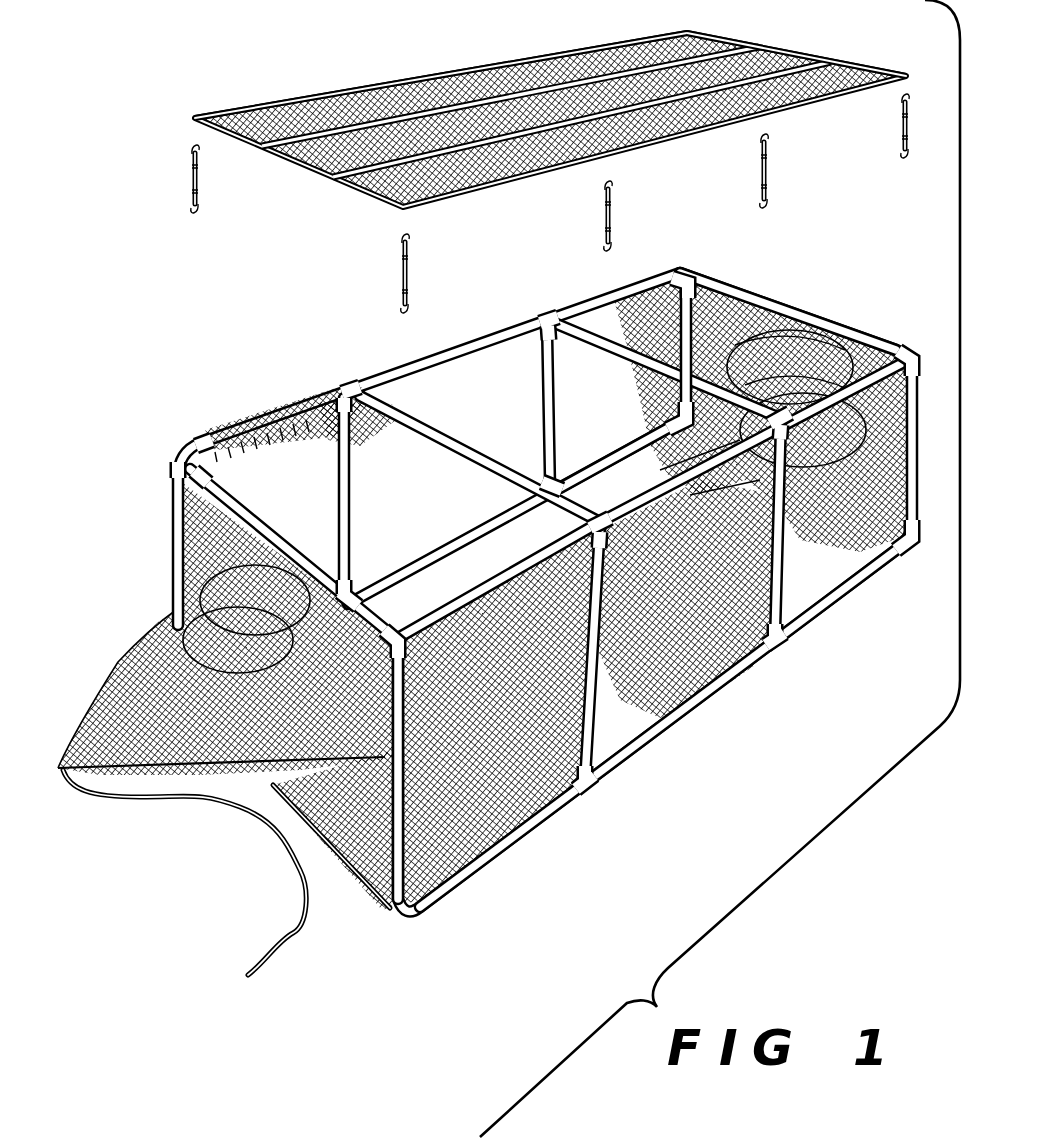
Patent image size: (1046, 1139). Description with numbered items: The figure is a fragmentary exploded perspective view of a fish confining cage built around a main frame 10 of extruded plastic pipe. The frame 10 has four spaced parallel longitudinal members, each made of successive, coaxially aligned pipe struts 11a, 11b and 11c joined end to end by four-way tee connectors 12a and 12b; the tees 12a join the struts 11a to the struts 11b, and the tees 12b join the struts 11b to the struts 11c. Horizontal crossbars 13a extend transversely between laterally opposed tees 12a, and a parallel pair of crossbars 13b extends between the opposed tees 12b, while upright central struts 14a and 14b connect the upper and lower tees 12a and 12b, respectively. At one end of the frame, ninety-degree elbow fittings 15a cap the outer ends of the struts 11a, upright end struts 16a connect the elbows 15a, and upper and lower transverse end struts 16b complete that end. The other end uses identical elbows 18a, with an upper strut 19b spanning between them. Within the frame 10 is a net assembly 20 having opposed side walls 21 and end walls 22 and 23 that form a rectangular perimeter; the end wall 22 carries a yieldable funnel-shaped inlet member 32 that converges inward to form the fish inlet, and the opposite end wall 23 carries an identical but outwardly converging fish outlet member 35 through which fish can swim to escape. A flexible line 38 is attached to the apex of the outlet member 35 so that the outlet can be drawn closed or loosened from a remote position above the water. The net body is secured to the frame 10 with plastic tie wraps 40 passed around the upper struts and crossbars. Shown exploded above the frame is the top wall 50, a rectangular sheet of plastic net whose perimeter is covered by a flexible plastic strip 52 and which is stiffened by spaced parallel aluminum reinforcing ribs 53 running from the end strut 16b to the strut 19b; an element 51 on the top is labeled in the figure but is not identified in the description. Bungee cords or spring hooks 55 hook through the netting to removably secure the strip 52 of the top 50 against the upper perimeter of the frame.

The main frame 10 is at (503, 328).
The pipe strut 11a is at (272, 412).
The pipe strut 11b is at (458, 360).
The pipe strut 11c is at (612, 302).
The four-way tee connector 12a is at (585, 792).
The four-way tee connector 12b is at (780, 641).
The crossbar 13a is at (437, 437).
The crossbar 13b is at (666, 370).
The central strut 14a is at (347, 490).
The central strut 14b is at (545, 398).
The elbow fitting 15a is at (182, 450).
The end strut 16a is at (172, 557).
The end strut 16b is at (252, 502).
The elbow fitting 18a is at (685, 283).
The strut 19b is at (782, 312).
The net assembly 20 is at (455, 866).
The side wall 21 is at (674, 278).
The end wall 22 is at (738, 296).
The end wall 23 is at (172, 522).
The fish inlet member 32 is at (660, 430).
The fish outlet member 35 is at (128, 686).
The flexible line 38 is at (213, 801).
The tie wrap 40 is at (380, 912).
The top wall 50 is at (481, 60).
The cover cross bar 51 is at (395, 85).
The flexible plastic strip 52 is at (310, 102).
The reinforcing rib 53 is at (840, 58).
The spring hook 55 is at (190, 190).